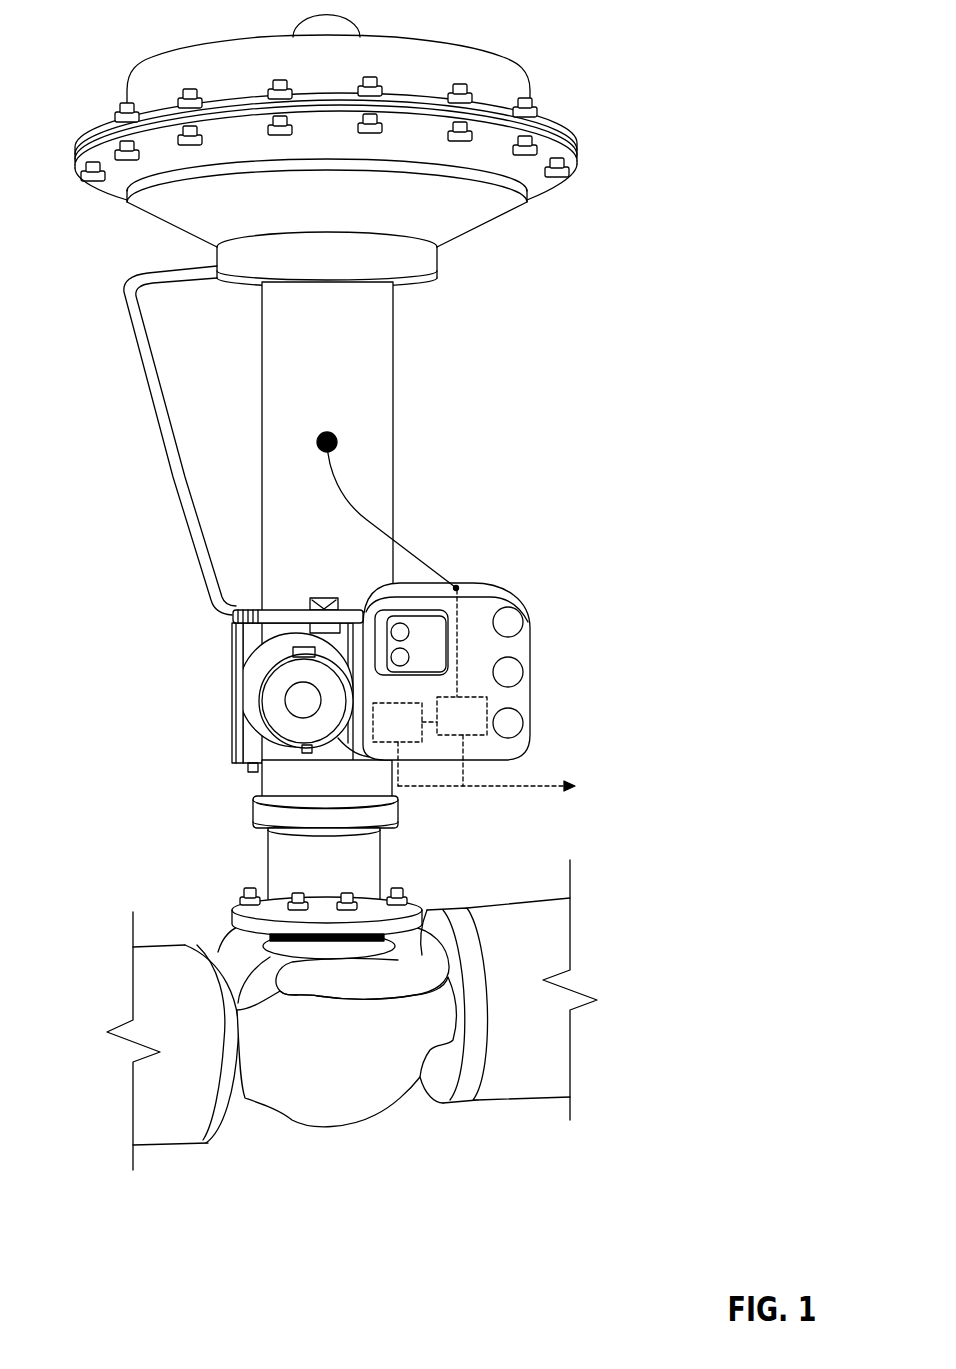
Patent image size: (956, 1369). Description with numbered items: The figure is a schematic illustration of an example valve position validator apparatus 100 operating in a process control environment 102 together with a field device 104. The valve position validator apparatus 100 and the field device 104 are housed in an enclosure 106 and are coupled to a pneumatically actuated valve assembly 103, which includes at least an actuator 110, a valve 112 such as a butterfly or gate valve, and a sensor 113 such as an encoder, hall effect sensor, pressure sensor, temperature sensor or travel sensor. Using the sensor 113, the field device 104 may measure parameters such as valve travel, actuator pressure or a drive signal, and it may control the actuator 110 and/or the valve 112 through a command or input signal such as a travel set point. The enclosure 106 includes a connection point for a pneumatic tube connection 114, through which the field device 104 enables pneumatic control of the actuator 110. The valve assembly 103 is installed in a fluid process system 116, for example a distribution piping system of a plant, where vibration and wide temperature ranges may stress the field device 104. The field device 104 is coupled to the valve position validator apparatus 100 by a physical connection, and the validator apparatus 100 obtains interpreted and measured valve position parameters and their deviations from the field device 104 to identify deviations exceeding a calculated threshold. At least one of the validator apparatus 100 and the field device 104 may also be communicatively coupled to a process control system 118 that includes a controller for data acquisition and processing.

The valve position validator apparatus 100 is at (388, 748).
The process control environment 102 is at (592, 364).
The valve assembly 103 is at (393, 422).
The field device 104 is at (488, 703).
The enclosure 106 is at (530, 666).
The actuator 110 is at (463, 46).
The valve 112 is at (233, 925).
The sensor 113 is at (327, 442).
The pneumatic tube connection 114 is at (146, 270).
The fluid process system 116 is at (464, 866).
The process control system 118 is at (622, 814).